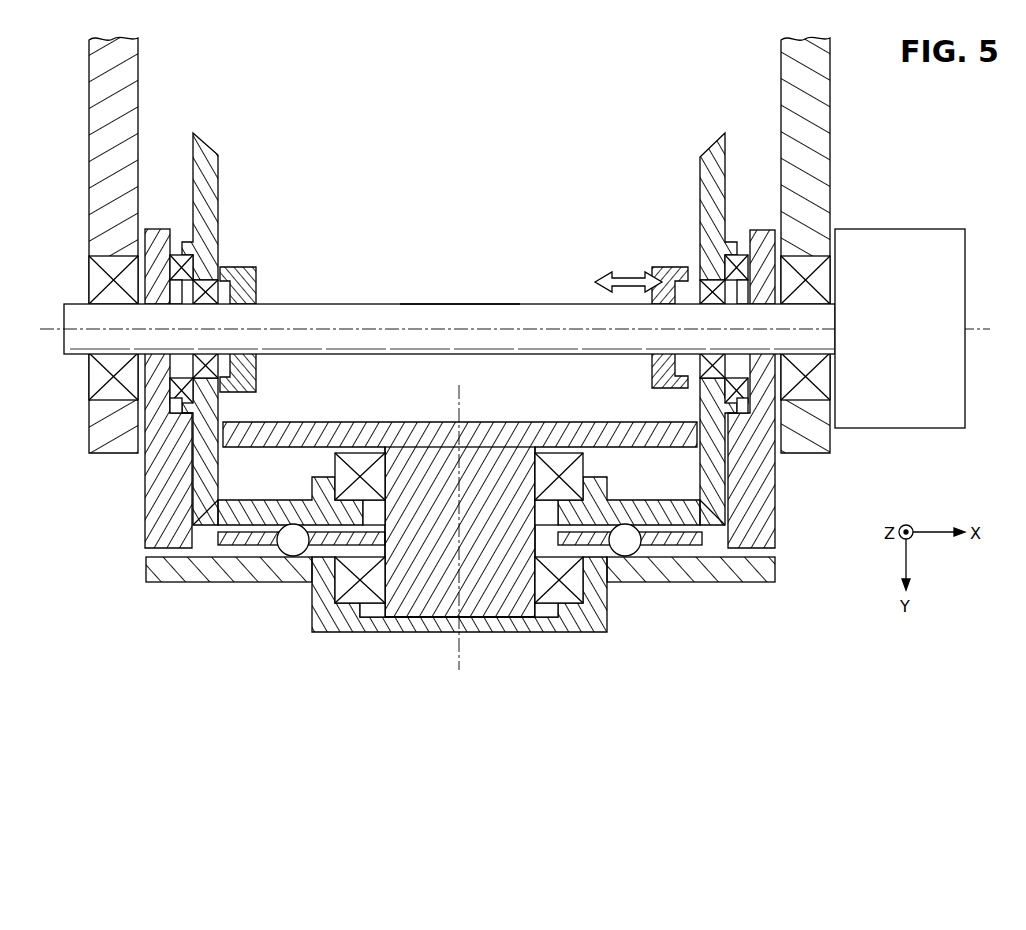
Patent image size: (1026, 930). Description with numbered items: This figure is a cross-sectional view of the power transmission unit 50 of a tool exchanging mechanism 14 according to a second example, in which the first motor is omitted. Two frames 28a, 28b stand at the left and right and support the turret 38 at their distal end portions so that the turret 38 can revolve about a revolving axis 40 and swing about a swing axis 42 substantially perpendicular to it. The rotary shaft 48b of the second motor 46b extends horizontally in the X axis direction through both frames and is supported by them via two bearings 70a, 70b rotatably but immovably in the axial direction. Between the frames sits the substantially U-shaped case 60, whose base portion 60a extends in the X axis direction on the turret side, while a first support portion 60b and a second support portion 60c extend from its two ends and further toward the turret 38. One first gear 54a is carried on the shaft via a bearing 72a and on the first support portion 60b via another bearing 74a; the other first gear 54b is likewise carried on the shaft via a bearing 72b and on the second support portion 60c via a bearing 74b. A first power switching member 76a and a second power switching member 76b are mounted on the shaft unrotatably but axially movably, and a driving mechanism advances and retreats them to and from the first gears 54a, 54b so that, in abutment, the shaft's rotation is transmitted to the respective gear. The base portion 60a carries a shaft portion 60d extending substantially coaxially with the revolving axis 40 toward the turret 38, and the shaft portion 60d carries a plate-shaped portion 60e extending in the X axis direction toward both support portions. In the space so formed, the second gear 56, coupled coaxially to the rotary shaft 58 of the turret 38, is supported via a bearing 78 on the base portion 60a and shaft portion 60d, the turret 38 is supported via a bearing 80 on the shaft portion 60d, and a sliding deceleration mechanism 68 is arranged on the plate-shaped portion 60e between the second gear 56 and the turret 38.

The tool exchanging mechanism 14 is at (125, 594).
The frame 28a is at (98, 92).
The frame 28b is at (810, 100).
The turret 38 is at (166, 572).
The revolving axis 40 is at (458, 400).
The swing axis 42 is at (377, 330).
The second motor 46b is at (915, 238).
The rotary shaft of the second motor 48b is at (445, 312).
The power transmission unit 50 is at (686, 116).
The first gear 54a is at (210, 172).
The first gear 54b is at (706, 178).
The second gear 56 is at (273, 505).
The rotary shaft 58 is at (325, 592).
The case 60 is at (497, 427).
The base portion 60a is at (596, 425).
The first support portion 60b is at (157, 228).
The second support portion 60c is at (760, 235).
The shaft portion 60d is at (480, 590).
The plate-shaped portion 60e is at (680, 535).
The sliding deceleration mechanism 68 is at (622, 545).
The bearing 70a is at (100, 282).
The bearing 70b is at (820, 282).
The bearing 72a is at (215, 367).
The bearing 72b is at (712, 355).
The bearing 74a is at (188, 268).
The bearing 74b is at (735, 268).
The first power switching member 76a is at (237, 390).
The second power switching member 76b is at (650, 376).
The bearing 78 is at (577, 471).
The bearing 80 is at (545, 585).